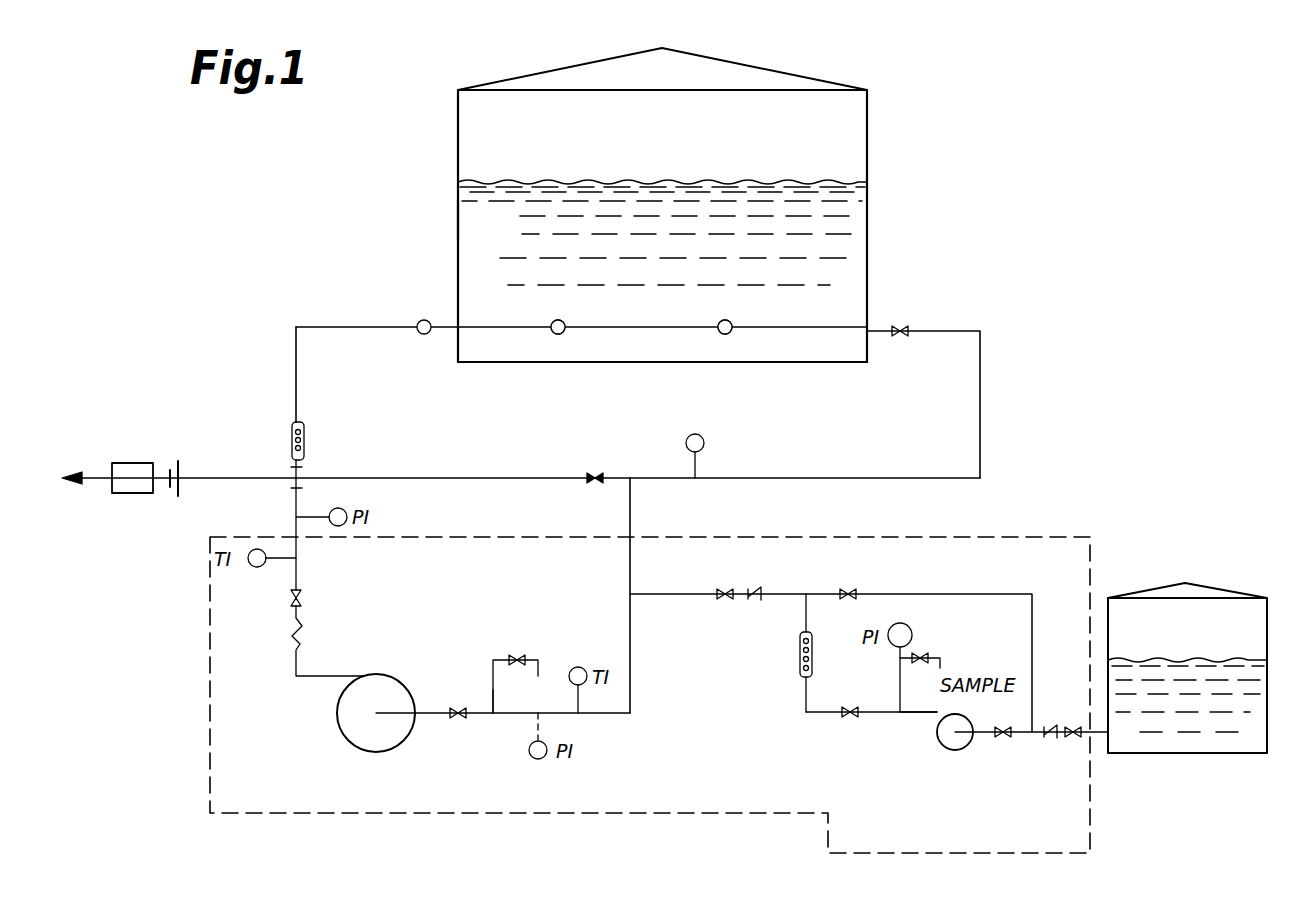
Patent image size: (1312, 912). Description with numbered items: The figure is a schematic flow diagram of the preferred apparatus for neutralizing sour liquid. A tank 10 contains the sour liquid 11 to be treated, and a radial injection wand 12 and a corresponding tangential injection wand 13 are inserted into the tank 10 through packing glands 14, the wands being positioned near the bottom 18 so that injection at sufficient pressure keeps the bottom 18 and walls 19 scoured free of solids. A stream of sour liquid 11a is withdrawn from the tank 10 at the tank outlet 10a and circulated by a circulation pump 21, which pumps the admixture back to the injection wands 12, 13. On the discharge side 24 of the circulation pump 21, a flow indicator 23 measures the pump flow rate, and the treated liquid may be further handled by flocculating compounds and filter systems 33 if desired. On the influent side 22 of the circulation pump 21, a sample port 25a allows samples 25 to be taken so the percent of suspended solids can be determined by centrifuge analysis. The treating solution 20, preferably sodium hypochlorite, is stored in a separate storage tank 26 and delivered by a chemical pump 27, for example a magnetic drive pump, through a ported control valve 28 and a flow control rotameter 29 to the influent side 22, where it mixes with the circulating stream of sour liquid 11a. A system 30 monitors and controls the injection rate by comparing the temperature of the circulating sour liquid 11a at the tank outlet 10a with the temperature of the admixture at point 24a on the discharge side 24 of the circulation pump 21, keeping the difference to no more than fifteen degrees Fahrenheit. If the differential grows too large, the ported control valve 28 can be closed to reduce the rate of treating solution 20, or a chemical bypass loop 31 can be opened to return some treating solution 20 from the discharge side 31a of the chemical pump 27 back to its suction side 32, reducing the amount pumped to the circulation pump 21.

The tank 10 is at (670, 163).
The sour liquid 11 is at (662, 232).
The walls 19 is at (458, 222).
The radial injection wand 12 is at (662, 315).
The tangential injection wand 13 is at (705, 328).
The packing glands 14 is at (457, 320).
The bottom 18 is at (510, 362).
The stream of sour liquid 11a is at (894, 365).
The tank outlet 10a is at (688, 478).
The filter systems 33 is at (188, 492).
The flow indicator 23 is at (329, 455).
The system 30 is at (208, 678).
The point 24a is at (294, 562).
The discharge side 24 is at (346, 674).
The circulation pump 21 is at (406, 731).
The influent side 22 is at (419, 704).
The samples 25 is at (523, 668).
The sample port 25a is at (493, 688).
The chemical bypass loop 31 is at (850, 648).
The flow control rotameter 29 is at (800, 662).
The ported control valve 28 is at (844, 714).
The discharge side 31a is at (926, 714).
The suction side 32 is at (977, 734).
The chemical pump 27 is at (960, 750).
The storage tank 26 is at (1187, 668).
The treating solution 20 is at (1187, 695).